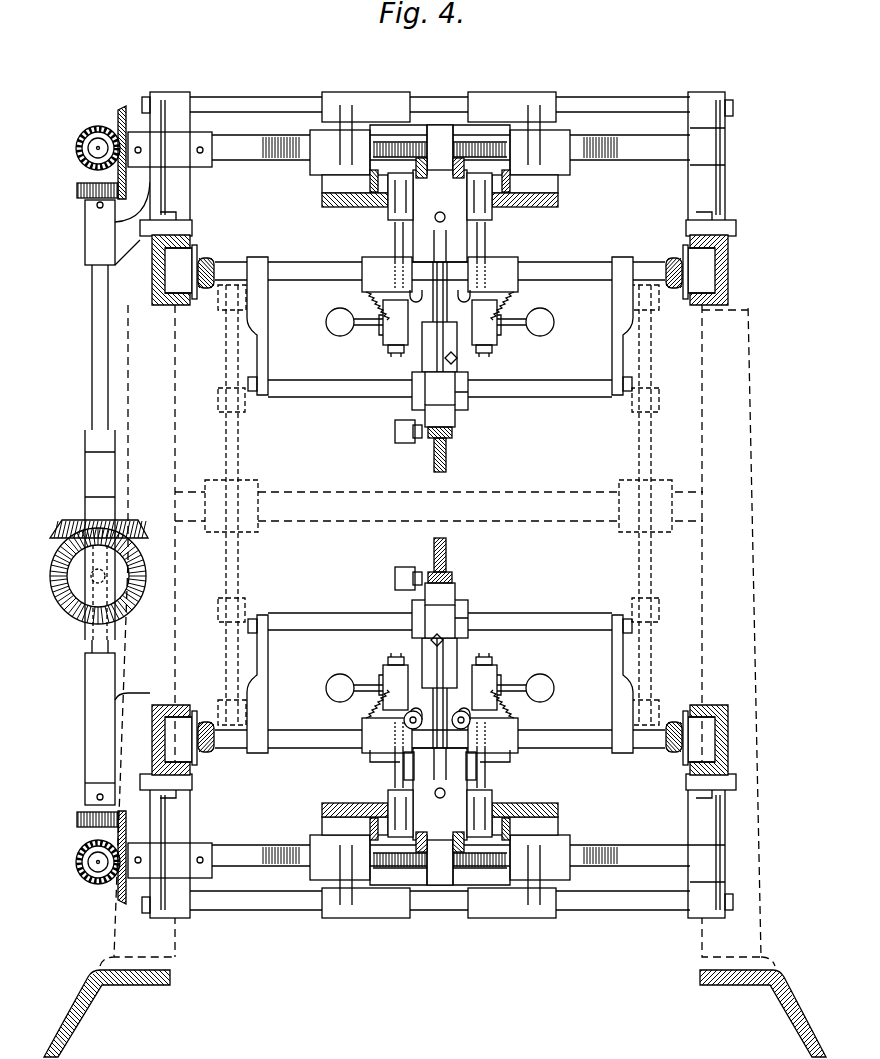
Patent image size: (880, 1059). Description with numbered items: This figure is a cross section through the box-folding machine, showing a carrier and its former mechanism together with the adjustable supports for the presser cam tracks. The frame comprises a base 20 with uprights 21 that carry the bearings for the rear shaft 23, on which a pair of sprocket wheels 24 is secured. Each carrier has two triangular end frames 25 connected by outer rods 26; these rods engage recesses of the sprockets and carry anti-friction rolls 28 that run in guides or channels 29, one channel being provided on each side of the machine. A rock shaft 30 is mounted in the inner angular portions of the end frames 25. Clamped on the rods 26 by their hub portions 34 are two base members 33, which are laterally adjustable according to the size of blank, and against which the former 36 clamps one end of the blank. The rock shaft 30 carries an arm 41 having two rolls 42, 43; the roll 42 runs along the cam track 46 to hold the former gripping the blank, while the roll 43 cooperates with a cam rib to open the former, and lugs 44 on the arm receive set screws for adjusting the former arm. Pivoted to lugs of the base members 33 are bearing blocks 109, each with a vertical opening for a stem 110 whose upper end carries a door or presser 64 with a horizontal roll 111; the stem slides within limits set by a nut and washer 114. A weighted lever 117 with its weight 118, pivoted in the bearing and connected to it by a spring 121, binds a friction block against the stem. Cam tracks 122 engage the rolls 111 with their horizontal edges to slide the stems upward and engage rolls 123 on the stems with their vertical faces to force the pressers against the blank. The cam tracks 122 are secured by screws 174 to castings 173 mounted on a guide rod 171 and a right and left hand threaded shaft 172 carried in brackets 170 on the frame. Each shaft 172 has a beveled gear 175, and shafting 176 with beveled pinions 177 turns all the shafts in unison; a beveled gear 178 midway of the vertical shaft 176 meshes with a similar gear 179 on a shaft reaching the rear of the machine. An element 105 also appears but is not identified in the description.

The base 20 is at (82, 1000).
The uprights 21 is at (752, 575).
The rear shaft 23 is at (540, 495).
The sprocket wheels 24 is at (245, 470).
The end frames 25 is at (268, 326).
The outer rods 26 is at (555, 262).
The anti-friction rolls 28 is at (180, 265).
The guides or channels 29 is at (152, 290).
The rock shaft 30 is at (526, 386).
The base members 33 is at (402, 763).
The hub portions 34 is at (372, 753).
The former 36 is at (443, 856).
The arm 41 is at (412, 400).
The roll 42 is at (455, 420).
The roll 43 is at (398, 443).
The lugs 44 is at (445, 640).
The cam track 46 is at (447, 455).
The door or presser 64 is at (439, 499).
The roller 105 is at (415, 712).
The bearing blocks 109 is at (408, 318).
The rod or stem 110 is at (393, 250).
The horizontal roll 111 is at (330, 200).
The nut and washer 114 is at (388, 350).
The lever 117 is at (375, 327).
The weight 118 is at (333, 312).
The spring 121 is at (367, 298).
The cam tracks 122 is at (392, 210).
The rolls 123 is at (388, 228).
The brackets 170 is at (180, 200).
The guide rod 171 is at (238, 97).
The right and left hand threaded shaft 172 is at (243, 141).
The castings 173 is at (372, 92).
The screws 174 is at (332, 170).
The beveled gear 175 is at (122, 108).
The shafting 176 is at (85, 150).
The beveled pinions 177 is at (88, 130).
The beveled gear 178 is at (138, 520).
The gear 179 is at (125, 615).